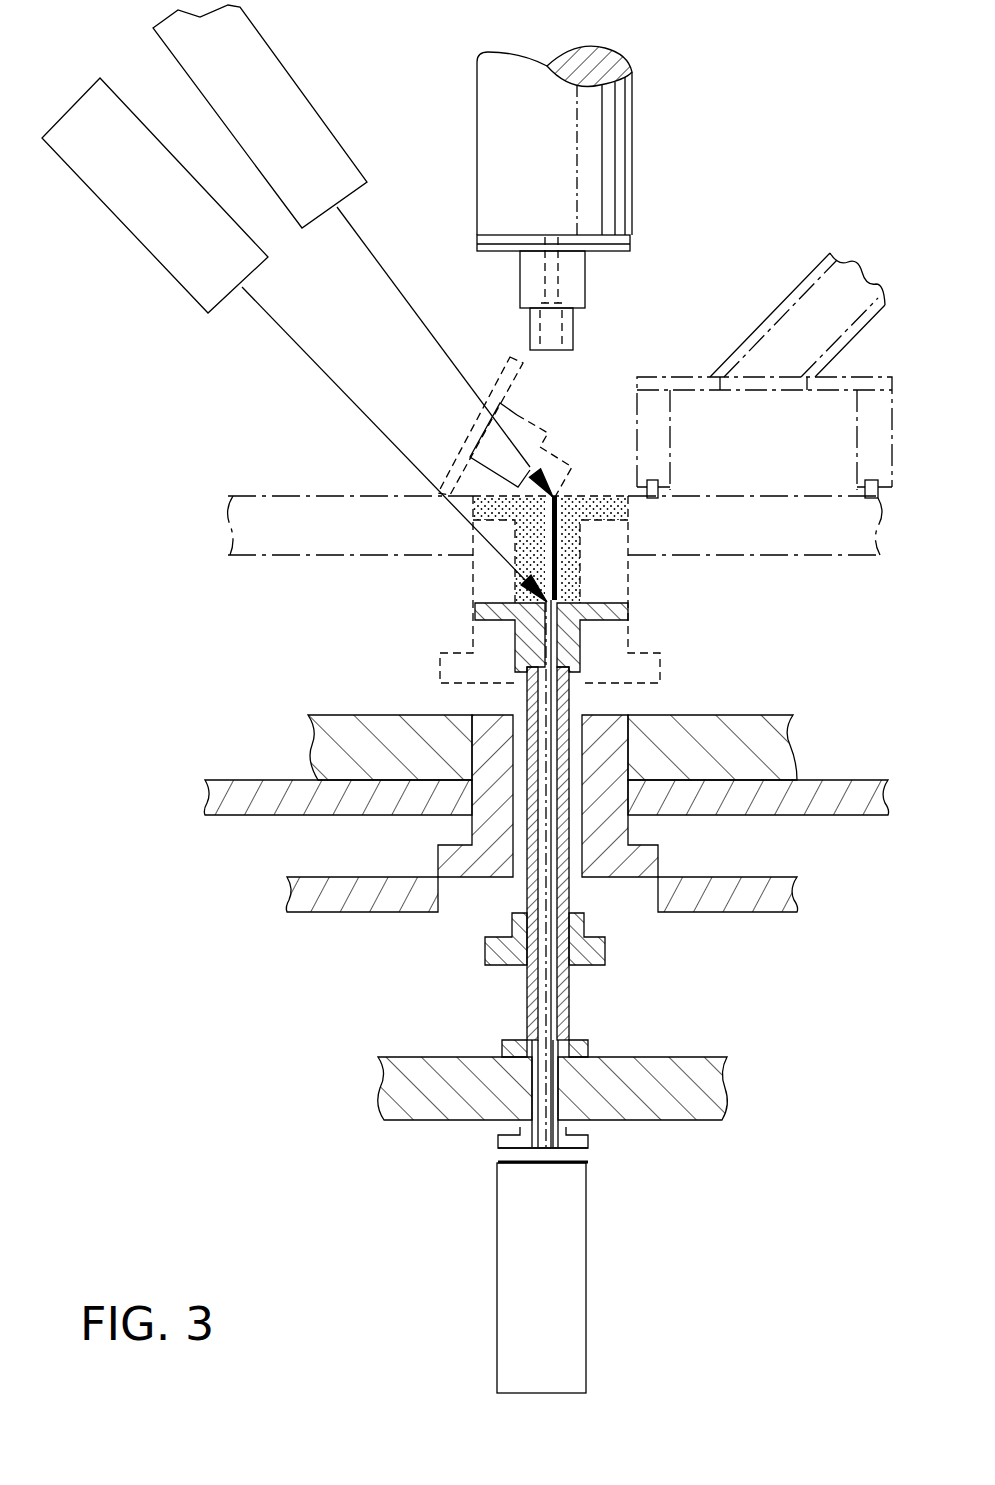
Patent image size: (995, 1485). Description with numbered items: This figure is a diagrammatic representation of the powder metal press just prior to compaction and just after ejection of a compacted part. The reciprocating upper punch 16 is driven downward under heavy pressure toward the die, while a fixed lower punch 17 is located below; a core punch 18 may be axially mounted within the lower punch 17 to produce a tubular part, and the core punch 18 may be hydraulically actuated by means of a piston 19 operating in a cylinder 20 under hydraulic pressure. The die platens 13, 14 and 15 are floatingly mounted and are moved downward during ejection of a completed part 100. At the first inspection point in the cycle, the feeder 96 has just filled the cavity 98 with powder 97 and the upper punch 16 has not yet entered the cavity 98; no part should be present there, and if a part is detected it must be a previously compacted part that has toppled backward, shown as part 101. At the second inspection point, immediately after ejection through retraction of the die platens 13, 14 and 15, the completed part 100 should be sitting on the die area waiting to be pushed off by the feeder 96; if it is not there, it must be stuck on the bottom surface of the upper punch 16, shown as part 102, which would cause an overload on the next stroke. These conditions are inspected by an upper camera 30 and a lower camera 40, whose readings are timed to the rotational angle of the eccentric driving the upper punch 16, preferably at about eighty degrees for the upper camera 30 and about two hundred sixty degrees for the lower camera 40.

The die platen 13 is at (752, 727).
The die platen 14 is at (838, 792).
The die platen 15 is at (748, 883).
The upper punch 16 is at (612, 148).
The lower punch 17 is at (565, 927).
The core punch 18 is at (545, 997).
The piston 19 is at (580, 1155).
The cylinder 20 is at (568, 1267).
The upper camera 30 is at (260, 58).
The lower camera 40 is at (113, 183).
The feeder 96 is at (710, 403).
The powder 97 is at (574, 513).
The cavity 98 is at (573, 572).
The completed part 100 is at (495, 613).
The toppled part 101 is at (517, 418).
The stuck part 102 is at (573, 285).